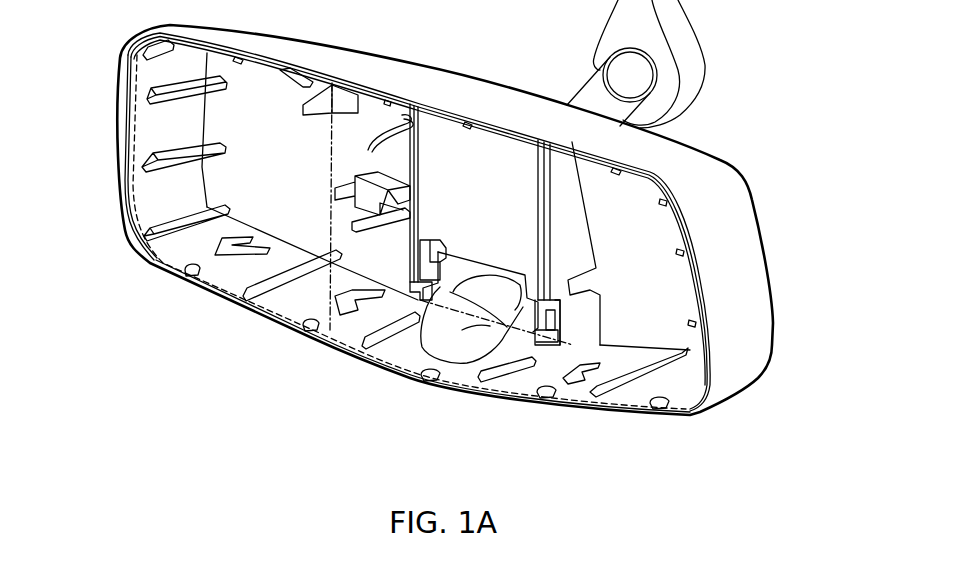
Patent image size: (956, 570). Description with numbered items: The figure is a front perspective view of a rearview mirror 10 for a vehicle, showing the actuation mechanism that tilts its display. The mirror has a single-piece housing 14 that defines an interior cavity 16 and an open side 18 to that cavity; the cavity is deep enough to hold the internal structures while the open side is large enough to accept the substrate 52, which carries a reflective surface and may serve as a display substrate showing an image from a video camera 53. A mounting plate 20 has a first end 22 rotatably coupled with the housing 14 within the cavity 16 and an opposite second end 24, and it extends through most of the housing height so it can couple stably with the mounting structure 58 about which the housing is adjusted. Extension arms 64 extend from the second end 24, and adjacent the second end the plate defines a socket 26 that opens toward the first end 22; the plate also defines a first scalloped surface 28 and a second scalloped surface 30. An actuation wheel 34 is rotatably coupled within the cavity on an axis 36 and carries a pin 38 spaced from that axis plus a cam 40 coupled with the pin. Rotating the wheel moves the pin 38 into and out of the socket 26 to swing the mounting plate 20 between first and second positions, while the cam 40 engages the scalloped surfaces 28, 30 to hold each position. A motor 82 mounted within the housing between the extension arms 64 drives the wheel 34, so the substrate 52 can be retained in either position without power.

The rearview mirror 10 is at (785, 137).
The housing 14 is at (743, 242).
The interior cavity 16 is at (146, 122).
The open side 18 is at (119, 189).
The mounting plate 20 is at (453, 147).
The first end 22 is at (513, 140).
The second end 24 is at (535, 280).
The socket 26 is at (545, 313).
The first scalloped surface 28 is at (458, 283).
The second scalloped surface 30 is at (422, 273).
The actuation wheel 34 is at (430, 310).
The axis 36 is at (555, 308).
The pin 38 is at (548, 327).
The cam 40 is at (393, 350).
The substrate 52 is at (141, 270).
The video camera 53 is at (330, 176).
The mounting structure 58 is at (698, 34).
The extension arm 64 is at (417, 283).
The motor 82 is at (477, 320).